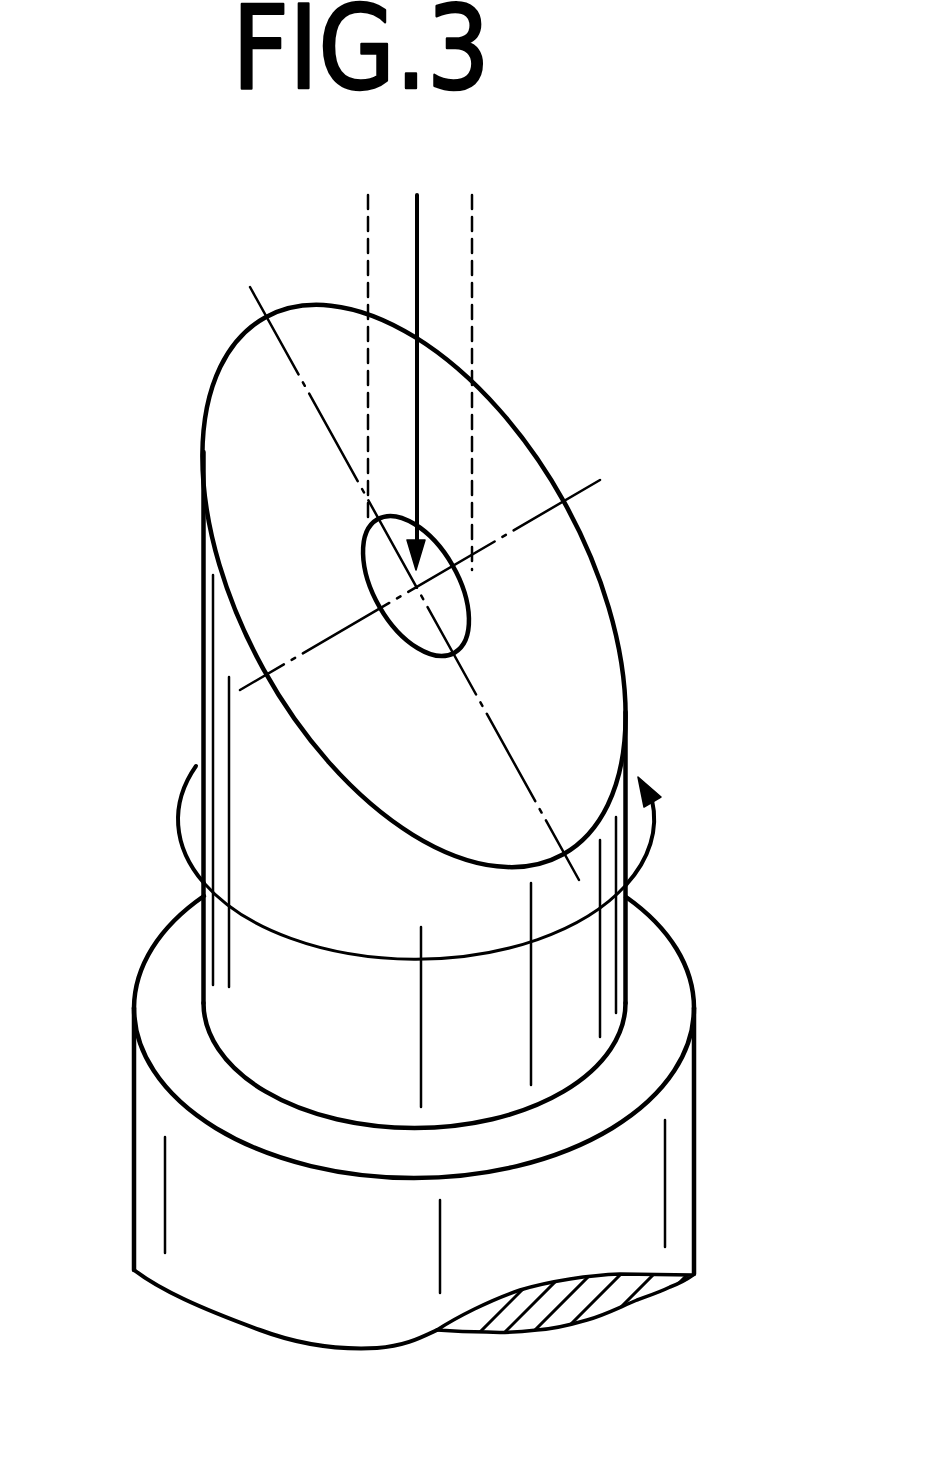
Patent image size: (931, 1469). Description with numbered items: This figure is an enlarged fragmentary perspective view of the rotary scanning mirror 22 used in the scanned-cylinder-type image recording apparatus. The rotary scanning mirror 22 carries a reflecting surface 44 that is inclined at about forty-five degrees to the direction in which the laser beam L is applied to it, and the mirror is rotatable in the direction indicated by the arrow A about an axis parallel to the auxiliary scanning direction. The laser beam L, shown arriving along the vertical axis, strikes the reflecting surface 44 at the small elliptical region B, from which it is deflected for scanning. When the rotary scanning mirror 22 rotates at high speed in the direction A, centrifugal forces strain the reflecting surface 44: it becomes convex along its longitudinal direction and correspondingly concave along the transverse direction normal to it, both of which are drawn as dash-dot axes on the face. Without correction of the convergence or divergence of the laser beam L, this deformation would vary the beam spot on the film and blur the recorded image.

The rotary scanning mirror 22 is at (155, 888).
The reflecting surface 44 is at (598, 724).
The bore (hole) opening B is at (437, 613).
The laser beam L is at (418, 264).
The direction of rotation A is at (437, 858).